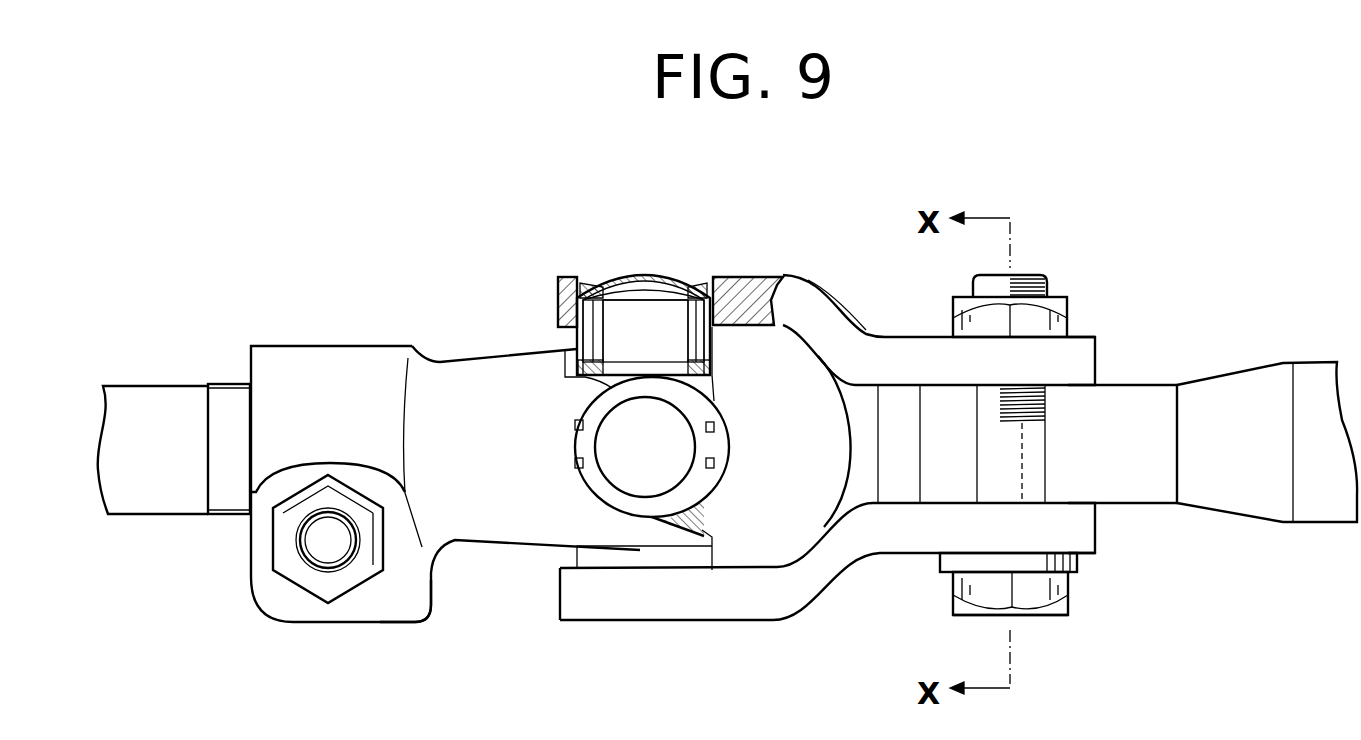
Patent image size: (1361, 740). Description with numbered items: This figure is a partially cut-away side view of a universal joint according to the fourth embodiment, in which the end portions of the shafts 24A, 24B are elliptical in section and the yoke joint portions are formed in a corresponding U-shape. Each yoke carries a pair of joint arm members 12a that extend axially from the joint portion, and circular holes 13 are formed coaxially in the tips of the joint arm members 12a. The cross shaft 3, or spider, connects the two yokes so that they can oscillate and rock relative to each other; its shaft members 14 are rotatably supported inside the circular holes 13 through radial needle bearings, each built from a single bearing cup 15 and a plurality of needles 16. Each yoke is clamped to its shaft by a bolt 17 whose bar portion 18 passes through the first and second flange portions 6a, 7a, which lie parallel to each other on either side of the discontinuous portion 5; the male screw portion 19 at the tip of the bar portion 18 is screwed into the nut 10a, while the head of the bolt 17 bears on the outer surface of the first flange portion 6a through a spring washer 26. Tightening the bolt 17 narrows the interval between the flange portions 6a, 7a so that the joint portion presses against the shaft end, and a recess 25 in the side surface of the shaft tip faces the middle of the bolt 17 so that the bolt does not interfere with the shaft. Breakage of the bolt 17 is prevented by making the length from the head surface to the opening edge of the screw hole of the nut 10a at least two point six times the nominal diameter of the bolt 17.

The cross shaft 3 is at (640, 317).
The discontinuous portion 5 is at (958, 496).
The first flange portion 6a is at (1073, 520).
The second flange portion 7a is at (390, 587).
The nut 10a is at (302, 568).
The joint arm member 12a is at (737, 273).
The circular hole 13 is at (593, 285).
The shaft member 14 is at (662, 310).
The bearing cup 15 is at (617, 272).
The needle 16 is at (590, 323).
The bolt 17 is at (330, 547).
The bar portion 18 is at (967, 615).
The male screw portion 19 is at (1017, 275).
The shaft 24A is at (1280, 360).
The shaft 24B is at (170, 383).
The recess 25 is at (1080, 433).
The spring washer 26 is at (1077, 563).